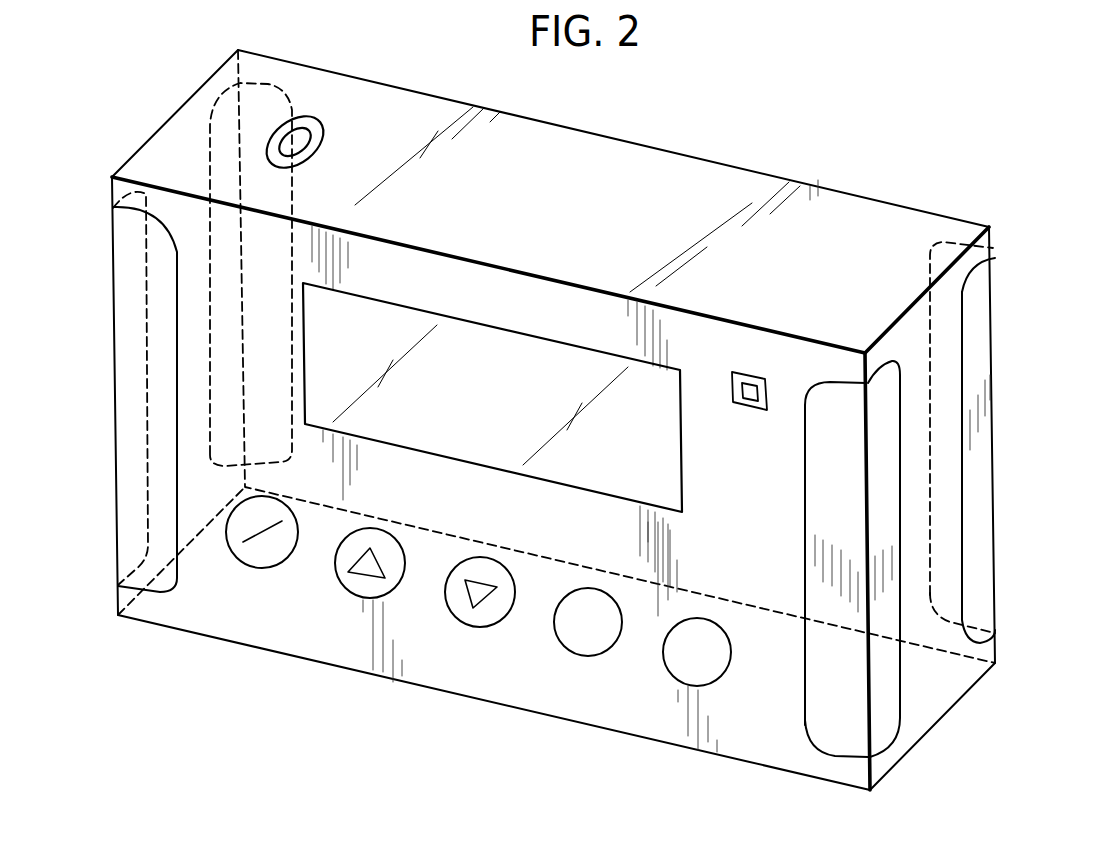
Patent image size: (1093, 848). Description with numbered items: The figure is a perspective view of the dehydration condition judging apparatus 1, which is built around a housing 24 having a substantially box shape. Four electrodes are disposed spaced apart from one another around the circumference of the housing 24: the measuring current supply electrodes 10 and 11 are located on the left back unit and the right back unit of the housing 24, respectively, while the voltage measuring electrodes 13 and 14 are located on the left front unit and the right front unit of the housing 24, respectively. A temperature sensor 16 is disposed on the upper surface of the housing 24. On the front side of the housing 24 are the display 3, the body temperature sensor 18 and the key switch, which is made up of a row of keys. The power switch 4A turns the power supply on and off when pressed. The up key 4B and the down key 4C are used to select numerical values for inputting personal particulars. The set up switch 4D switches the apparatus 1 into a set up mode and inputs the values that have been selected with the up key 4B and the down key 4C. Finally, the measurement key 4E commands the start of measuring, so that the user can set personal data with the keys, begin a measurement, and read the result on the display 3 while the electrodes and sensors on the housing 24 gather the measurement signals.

The dehydration condition judging apparatus 1 is at (722, 140).
The display 3 is at (492, 400).
The power switch 4A is at (240, 552).
The up key 4B is at (348, 587).
The down key 4C is at (458, 605).
The set up switch 4D is at (580, 640).
The measurement key 4E is at (683, 672).
The measuring current supply electrode 10 is at (223, 163).
The measuring current supply electrode 11 is at (977, 484).
The voltage measuring electrode 13 is at (165, 380).
The voltage measuring electrode 14 is at (884, 667).
The temperature sensor 16 is at (299, 137).
The body temperature sensor 18 is at (748, 392).
The housing 24 is at (880, 253).